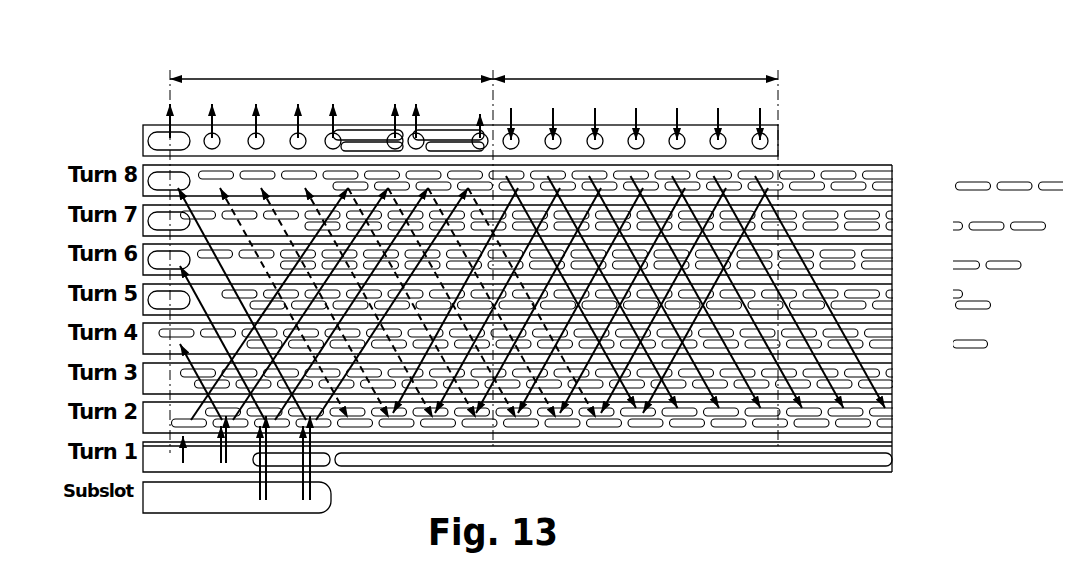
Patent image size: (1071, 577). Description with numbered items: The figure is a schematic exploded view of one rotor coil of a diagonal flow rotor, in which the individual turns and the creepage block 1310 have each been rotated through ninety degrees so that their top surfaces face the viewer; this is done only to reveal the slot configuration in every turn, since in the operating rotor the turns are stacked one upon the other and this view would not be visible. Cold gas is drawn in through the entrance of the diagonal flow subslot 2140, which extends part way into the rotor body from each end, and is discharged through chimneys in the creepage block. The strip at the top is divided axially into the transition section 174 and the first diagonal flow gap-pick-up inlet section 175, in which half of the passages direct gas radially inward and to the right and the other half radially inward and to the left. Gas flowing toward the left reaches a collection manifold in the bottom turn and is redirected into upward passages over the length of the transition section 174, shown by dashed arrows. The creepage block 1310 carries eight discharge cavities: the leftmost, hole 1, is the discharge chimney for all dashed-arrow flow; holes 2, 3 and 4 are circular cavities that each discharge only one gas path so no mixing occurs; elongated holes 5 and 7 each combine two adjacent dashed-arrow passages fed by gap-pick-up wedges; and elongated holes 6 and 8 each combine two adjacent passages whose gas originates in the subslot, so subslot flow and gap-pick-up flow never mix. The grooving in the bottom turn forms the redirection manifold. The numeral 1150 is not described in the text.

The first conductor slot position 1150 is at (150, 132).
The creepage block 1310 is at (770, 134).
The transition section 174 is at (331, 62).
The first diagonal flow gap-pick-up inlet section 175 is at (635, 62).
The diagonal flow subslot 2140 is at (273, 488).
The hole number 1 is at (170, 130).
The hole number 2 is at (205, 131).
The hole number 3 is at (250, 131).
The hole number 4 is at (291, 131).
The hole number 5 is at (340, 128).
The hole number 6 is at (370, 140).
The hole number 7 is at (413, 128).
The hole number 8 is at (457, 140).